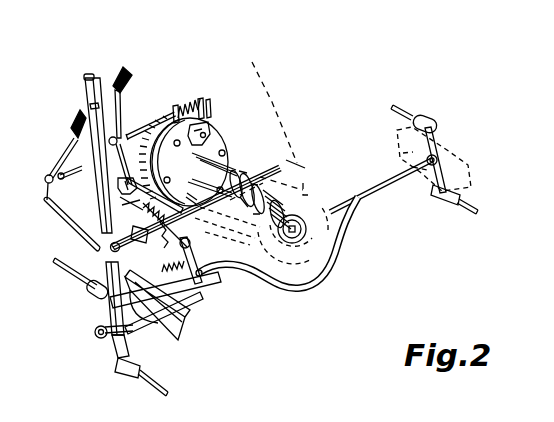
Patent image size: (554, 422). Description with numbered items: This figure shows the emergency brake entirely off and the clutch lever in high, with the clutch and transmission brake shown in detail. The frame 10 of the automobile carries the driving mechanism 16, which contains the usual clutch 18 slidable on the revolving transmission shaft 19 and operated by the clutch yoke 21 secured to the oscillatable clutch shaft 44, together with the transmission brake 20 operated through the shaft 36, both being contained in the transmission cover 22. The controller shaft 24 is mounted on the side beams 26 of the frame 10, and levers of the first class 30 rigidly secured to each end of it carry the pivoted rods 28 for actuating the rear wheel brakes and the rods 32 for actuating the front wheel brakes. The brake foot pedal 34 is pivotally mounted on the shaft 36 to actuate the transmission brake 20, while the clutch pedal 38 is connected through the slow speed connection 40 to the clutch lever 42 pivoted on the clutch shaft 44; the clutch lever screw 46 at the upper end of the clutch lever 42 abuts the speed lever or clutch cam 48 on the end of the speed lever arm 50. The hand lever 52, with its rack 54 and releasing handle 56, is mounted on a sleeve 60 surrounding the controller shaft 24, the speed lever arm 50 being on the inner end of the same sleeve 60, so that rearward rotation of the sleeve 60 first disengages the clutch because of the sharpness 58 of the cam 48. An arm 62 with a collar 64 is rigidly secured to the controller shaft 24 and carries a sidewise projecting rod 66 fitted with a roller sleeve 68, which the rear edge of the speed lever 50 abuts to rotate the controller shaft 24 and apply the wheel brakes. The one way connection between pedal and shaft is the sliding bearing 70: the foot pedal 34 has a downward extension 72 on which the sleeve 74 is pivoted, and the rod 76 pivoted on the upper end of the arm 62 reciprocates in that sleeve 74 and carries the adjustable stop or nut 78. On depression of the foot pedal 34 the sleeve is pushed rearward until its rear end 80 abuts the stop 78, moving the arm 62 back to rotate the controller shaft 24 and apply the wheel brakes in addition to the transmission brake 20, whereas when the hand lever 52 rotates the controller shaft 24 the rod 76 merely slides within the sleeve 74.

The frame 10 is at (470, 187).
The driving mechanism 16 is at (236, 170).
The clutch 18 is at (300, 173).
The transmission shaft 19 is at (323, 198).
The transmission brake 20 is at (201, 105).
The clutch yoke 21 is at (283, 168).
The transmission cover 22 is at (275, 97).
The controller shaft 24 is at (392, 183).
The side beams 26 is at (455, 160).
The rods for actuating the rear wheel brakes 28 is at (477, 211).
The levers of the first class 30 is at (442, 137).
The rods for actuating the front wheel brakes 32 is at (407, 104).
The brake foot pedal 34 is at (121, 108).
The shaft 36 is at (168, 118).
The clutch pedal 38 is at (62, 152).
The slow speed connection 40 is at (110, 248).
The clutch lever 42 is at (62, 266).
The clutch shaft 44 is at (288, 160).
The clutch lever screw 46 is at (172, 250).
The speed lever (clutch cam) 48 is at (89, 290).
The speed lever arm 50 is at (160, 270).
The hand lever 52 is at (85, 82).
The rack 54 is at (198, 302).
The releasing handle 56 is at (98, 78).
The sharpness of the crank cam 58 is at (134, 231).
The sleeve 60 is at (215, 284).
The arm 62 is at (241, 257).
The collar 64 is at (216, 280).
The rod 66 is at (212, 292).
The roller sleeve 68 is at (213, 289).
The sliding bearing 70 is at (127, 187).
The downward extension 72 is at (119, 148).
The sleeve 74 is at (131, 203).
The rod 76 is at (228, 253).
The adjustable stop (nut) 78 is at (220, 226).
The rear end of the sleeve 80 is at (150, 214).